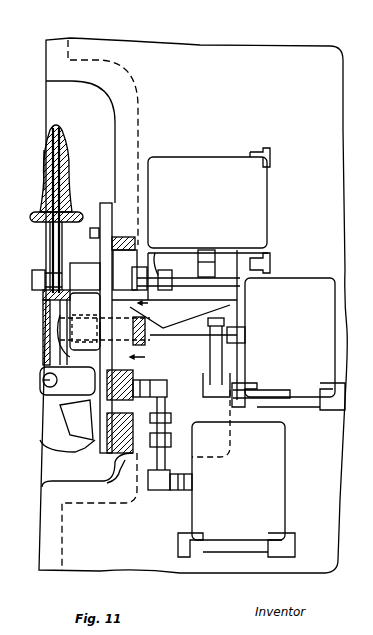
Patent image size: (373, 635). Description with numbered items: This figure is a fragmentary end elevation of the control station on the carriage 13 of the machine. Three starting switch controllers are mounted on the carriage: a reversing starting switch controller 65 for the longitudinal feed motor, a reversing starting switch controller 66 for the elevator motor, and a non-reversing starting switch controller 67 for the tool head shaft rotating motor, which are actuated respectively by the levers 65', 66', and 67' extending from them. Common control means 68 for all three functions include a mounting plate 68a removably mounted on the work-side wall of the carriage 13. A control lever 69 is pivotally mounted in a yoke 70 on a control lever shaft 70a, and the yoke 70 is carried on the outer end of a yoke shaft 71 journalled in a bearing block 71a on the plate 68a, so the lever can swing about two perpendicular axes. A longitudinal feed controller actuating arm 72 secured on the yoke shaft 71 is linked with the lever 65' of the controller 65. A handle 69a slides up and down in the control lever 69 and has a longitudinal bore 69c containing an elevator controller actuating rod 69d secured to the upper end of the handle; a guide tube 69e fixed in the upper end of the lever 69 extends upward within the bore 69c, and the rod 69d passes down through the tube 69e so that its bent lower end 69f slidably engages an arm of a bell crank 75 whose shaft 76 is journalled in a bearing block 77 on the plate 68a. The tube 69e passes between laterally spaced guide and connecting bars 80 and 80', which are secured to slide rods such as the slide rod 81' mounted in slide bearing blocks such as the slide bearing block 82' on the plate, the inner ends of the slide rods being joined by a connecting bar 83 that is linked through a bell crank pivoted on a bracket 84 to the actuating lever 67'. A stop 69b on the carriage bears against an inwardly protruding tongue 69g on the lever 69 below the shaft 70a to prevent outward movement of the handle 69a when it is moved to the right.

The carriage 13 is at (62, 567).
The reversing starting switch controller 65 is at (232, 489).
The lever 65' is at (192, 423).
The reversing starting switch controller 66 is at (288, 344).
The lever 66' is at (254, 347).
The non-reversing starting switch controller 67 is at (209, 224).
The actuating lever 67' is at (199, 256).
The common control means 68 is at (43, 213).
The mounting plate 68a is at (87, 470).
The control lever 69 is at (43, 326).
The handle 69a is at (45, 160).
The stop 69b is at (75, 451).
The bore 69c is at (69, 142).
The elevator controller actuating rod 69d is at (64, 178).
The guide tube 69e is at (60, 235).
The lower end of the rod 69f is at (76, 339).
The tongue 69g is at (65, 430).
The yoke 70 is at (67, 381).
The control lever shaft 70a is at (43, 380).
The yoke shaft 71 is at (116, 480).
The bearing block 71a is at (107, 401).
The longitudinal feed controller actuating arm 72 is at (164, 402).
The bell crank 75 is at (105, 321).
The shaft 76 is at (184, 333).
The bearing block 77 is at (113, 343).
The guide and connecting bar 80 is at (36, 274).
The guide and connecting bar 80' is at (85, 276).
The slide rod 81' is at (176, 270).
The slide bearing block 82' is at (112, 235).
The connecting bar 83 is at (162, 255).
The bracket 84 is at (174, 317).